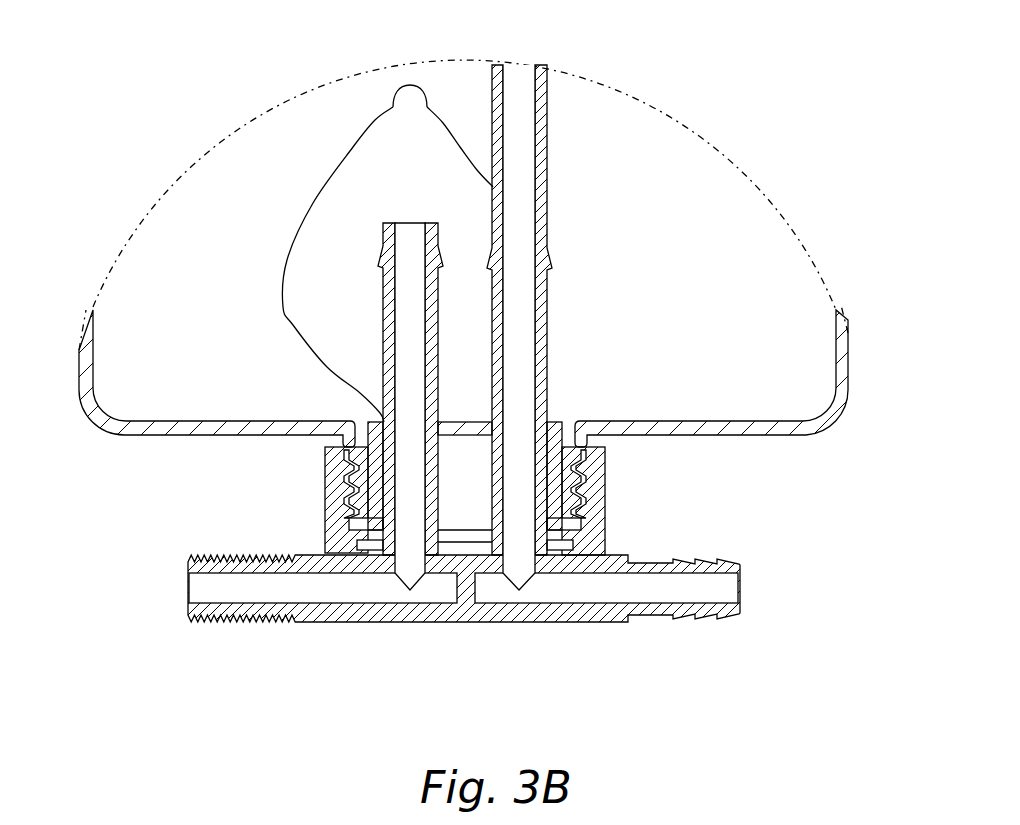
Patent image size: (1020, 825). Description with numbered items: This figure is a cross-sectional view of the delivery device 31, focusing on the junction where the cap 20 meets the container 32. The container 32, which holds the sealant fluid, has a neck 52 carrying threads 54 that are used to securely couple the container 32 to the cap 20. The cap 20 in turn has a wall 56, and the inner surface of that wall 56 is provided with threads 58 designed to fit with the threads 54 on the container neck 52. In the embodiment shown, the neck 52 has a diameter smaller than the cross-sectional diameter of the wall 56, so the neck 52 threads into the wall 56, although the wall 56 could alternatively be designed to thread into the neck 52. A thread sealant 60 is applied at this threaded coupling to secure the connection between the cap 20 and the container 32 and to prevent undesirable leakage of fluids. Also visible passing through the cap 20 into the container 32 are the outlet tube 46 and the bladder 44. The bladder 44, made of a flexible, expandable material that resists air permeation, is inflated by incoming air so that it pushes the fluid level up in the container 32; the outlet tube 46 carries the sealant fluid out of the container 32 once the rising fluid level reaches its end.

The cap 20 is at (143, 586).
The delivery device 31 is at (763, 83).
The container 32 is at (167, 260).
The bladder 44 is at (388, 158).
The outlet tube 46 is at (518, 123).
The neck 52 is at (563, 468).
The threads 54 is at (583, 480).
The wall 56 is at (605, 532).
The threads 58 is at (587, 500).
The thread sealant 60 is at (348, 498).